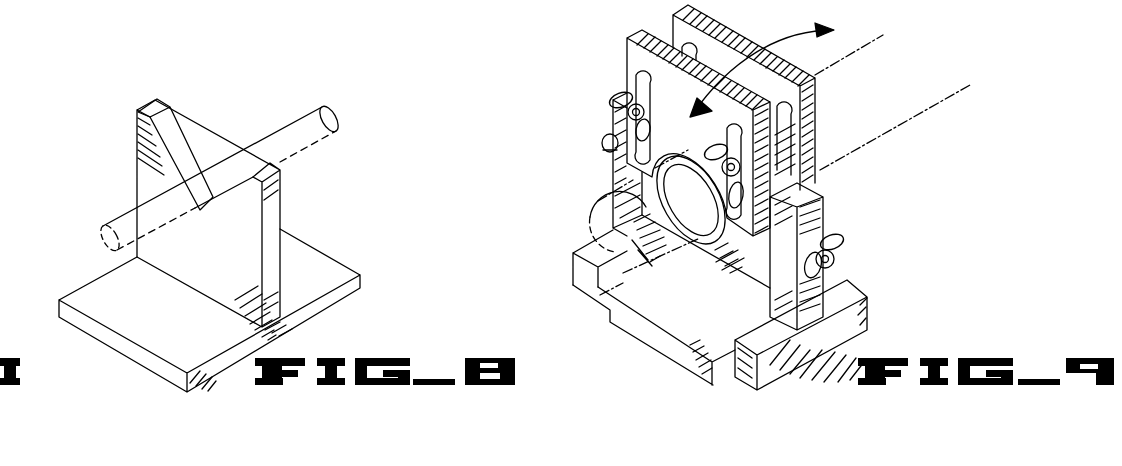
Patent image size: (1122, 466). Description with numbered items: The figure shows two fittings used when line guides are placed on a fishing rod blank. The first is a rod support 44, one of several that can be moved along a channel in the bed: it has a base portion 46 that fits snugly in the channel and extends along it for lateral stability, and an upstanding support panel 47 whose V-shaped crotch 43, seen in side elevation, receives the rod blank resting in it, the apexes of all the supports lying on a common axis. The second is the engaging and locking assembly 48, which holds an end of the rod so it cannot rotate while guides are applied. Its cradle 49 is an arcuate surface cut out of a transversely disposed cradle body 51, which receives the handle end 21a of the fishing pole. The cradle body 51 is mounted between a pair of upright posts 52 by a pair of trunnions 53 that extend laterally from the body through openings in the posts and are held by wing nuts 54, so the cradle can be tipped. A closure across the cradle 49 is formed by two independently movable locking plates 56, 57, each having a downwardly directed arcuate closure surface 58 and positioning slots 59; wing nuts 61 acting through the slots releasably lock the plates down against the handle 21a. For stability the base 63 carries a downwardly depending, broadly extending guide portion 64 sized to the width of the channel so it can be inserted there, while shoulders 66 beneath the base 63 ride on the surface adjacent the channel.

In FIG. 8, the handle end 21a is at (356, 259).
In FIG. 9, the handle end 21a is at (908, 126).
In FIG. 8, the V-shaped crotch 43 is at (204, 192).
In FIG. 8, the rod support 44 is at (226, 245).
In FIG. 8, the base portion 46 is at (214, 350).
In FIG. 8, the support panel 47 is at (240, 250).
In FIG. 9, the engaging and locking assembly 48 is at (724, 224).
In FIG. 9, the cradle 49 is at (704, 210).
In FIG. 9, the cradle body 51 is at (793, 165).
In FIG. 9, the upright post 52 is at (605, 153).
In FIG. 9, the trunnion 53 is at (828, 263).
In FIG. 9, the wing nut 54 is at (830, 242).
In FIG. 9, the locking plate 56 is at (637, 57).
In FIG. 9, the locking plate 57 is at (723, 34).
In FIG. 9, the arcuate closure surface 58 is at (640, 190).
In FIG. 9, the positioning slot 59 is at (642, 85).
In FIG. 9, the wing nut 61 is at (638, 103).
In FIG. 9, the base 63 is at (580, 262).
In FIG. 9, the guide portion 64 is at (610, 308).
In FIG. 9, the shoulder 66 is at (574, 287).